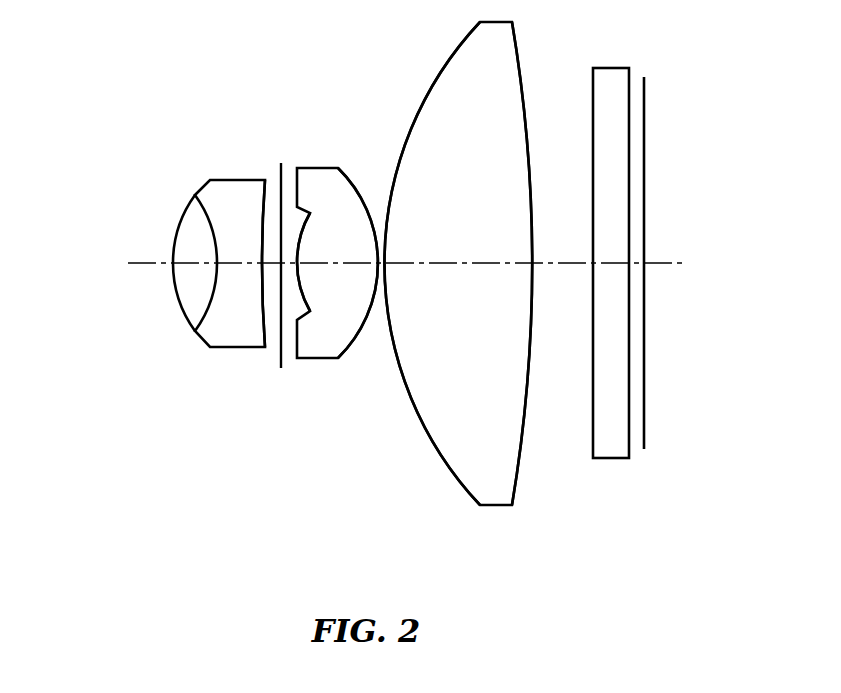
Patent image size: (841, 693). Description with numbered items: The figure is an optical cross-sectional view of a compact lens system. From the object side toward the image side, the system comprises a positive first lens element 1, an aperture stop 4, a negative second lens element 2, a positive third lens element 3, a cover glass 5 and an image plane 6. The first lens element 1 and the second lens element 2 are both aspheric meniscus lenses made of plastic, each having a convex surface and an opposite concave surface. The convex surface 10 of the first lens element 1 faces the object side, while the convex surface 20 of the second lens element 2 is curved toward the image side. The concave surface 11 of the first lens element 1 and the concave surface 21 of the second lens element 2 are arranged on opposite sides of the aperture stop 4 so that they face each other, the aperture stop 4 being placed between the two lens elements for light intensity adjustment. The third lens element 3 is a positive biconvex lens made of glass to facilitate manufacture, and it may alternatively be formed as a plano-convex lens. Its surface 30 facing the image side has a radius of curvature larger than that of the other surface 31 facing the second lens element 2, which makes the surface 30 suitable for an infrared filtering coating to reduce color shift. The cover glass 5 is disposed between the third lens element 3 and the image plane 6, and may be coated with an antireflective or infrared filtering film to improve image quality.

The positive first lens element 1 is at (228, 197).
The convex surface of the first lens element 10 is at (185, 213).
The concave surface of the first lens element 11 is at (262, 287).
The aperture stop 4 is at (280, 173).
The negative second lens element 2 is at (318, 185).
The convex surface of the second lens element 20 is at (367, 322).
The concave surface of the second lens element 21 is at (310, 307).
The positive third lens element 3 is at (480, 72).
The image-side surface of the third lens element 30 is at (525, 408).
The object-side surface of the third lens element 31 is at (430, 440).
The cover glass 5 is at (608, 92).
The image plane 6 is at (646, 115).